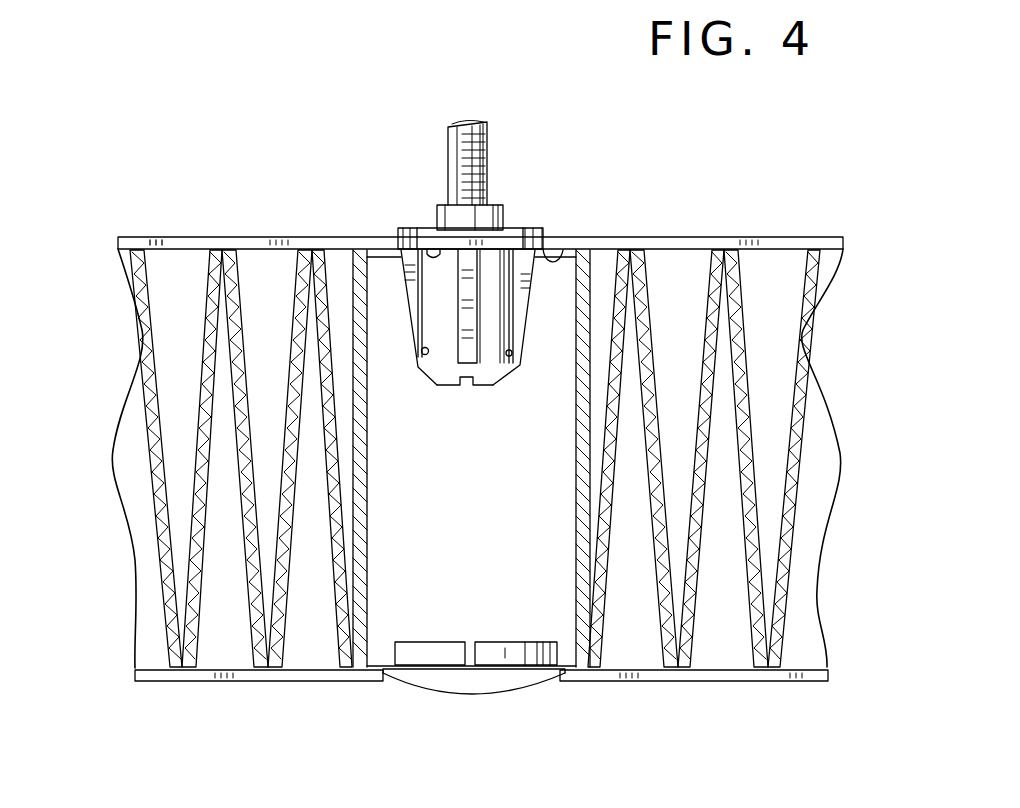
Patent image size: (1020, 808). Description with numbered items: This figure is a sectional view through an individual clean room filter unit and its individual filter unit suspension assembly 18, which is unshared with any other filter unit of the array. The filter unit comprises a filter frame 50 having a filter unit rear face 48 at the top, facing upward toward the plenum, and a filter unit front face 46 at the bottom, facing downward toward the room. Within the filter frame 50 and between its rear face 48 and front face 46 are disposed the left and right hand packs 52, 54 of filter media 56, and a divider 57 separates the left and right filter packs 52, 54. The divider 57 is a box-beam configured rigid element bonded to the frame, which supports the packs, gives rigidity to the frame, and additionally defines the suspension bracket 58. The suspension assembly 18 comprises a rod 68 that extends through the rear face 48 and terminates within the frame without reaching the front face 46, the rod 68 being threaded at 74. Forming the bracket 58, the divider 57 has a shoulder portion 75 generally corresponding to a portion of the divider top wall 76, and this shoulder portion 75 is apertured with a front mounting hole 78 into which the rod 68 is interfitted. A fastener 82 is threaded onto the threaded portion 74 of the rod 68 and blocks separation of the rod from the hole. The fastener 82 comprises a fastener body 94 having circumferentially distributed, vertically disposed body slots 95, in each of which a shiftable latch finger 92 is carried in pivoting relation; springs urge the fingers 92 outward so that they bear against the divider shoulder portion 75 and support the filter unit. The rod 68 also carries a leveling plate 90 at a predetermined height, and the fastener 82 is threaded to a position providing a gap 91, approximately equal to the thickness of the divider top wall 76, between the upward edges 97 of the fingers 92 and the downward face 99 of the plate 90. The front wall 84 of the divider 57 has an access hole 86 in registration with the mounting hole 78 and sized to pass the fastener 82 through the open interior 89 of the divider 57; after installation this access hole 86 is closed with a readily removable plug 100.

The filter unit suspension assembly 18 is at (448, 135).
The filter unit front face 46 is at (661, 682).
The filter unit rear face 48 is at (713, 237).
The filter frame 50 is at (183, 241).
The left hand filter pack 52 is at (200, 360).
The right hand filter pack 54 is at (801, 400).
The filter media 56 is at (158, 510).
The divider 57 is at (578, 513).
The suspension bracket 58 is at (593, 283).
The rod 68 is at (486, 137).
The threaded portion 74 is at (484, 188).
The divider shoulder portion 75 is at (533, 303).
The divider top wall 76 is at (363, 240).
The front mounting hole 78 is at (413, 268).
The fastener 82 is at (433, 383).
The front wall of the divider 84 is at (382, 666).
The access hole 86 is at (410, 665).
The open interior of the divider 89 is at (478, 545).
The leveling plate 90 is at (426, 254).
The gap 91 is at (410, 250).
The latch finger 92 is at (530, 297).
The fastener body 94 is at (491, 376).
The body slot 95 is at (458, 338).
The upward edge of the finger 97 is at (402, 258).
The downward face of the plate 99 is at (558, 262).
The plug 100 is at (461, 686).